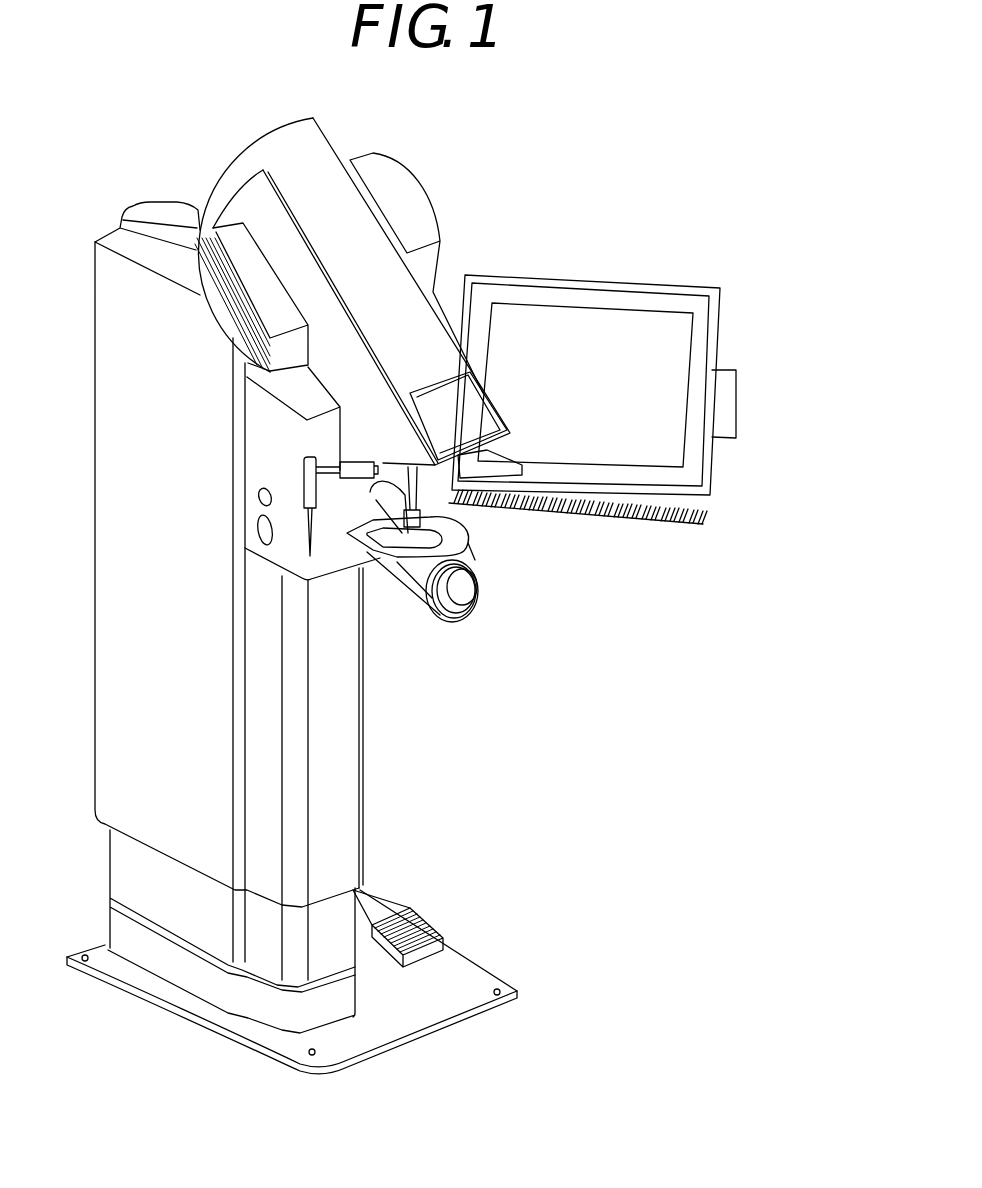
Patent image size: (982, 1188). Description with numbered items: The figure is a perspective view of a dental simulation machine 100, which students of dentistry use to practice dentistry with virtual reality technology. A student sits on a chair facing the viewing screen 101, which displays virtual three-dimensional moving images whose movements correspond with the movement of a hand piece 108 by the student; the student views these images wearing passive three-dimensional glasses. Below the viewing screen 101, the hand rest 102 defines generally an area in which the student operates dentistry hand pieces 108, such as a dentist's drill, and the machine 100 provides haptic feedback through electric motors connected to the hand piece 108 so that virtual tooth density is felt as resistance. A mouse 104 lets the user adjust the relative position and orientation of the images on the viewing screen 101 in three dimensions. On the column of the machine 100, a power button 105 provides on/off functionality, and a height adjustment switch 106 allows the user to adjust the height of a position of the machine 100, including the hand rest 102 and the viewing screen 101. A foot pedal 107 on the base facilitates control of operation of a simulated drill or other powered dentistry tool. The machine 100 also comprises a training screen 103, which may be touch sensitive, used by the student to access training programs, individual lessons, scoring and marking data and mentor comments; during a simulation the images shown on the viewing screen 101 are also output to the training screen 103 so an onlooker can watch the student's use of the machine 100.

The dental simulation machine 100 is at (725, 233).
The viewing screen 101 is at (468, 410).
The hand rest 102 is at (436, 514).
The training screen 103 is at (655, 360).
The mouse 104 is at (464, 588).
The power button 105 is at (257, 496).
The height adjustment switch 106 is at (258, 538).
The foot pedal 107 is at (418, 932).
The hand piece 108 is at (425, 493).